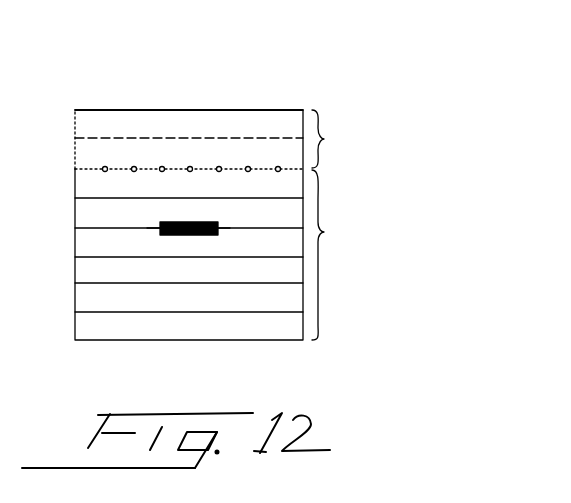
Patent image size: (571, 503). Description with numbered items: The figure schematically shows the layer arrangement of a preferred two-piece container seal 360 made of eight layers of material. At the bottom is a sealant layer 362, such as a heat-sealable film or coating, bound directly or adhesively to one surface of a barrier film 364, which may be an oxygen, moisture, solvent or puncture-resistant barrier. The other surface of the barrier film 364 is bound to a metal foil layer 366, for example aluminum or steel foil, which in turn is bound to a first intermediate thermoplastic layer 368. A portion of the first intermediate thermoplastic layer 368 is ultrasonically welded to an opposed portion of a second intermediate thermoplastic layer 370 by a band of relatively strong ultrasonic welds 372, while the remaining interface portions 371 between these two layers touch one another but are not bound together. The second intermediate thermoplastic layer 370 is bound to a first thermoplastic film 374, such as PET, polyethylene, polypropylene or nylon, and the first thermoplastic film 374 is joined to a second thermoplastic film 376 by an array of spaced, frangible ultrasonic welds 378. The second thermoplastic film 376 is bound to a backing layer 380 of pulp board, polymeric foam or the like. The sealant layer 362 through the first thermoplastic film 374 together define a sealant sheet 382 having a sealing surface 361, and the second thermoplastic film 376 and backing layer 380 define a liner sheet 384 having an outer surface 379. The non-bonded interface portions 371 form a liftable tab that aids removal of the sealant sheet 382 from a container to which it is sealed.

The two-piece container seal 360 is at (98, 392).
The sealing surface 361 is at (279, 345).
The sealant layer 362 is at (96, 331).
The barrier film 364 is at (92, 301).
The metal foil layer 366 is at (84, 273).
The first intermediate thermoplastic layer 368 is at (88, 245).
The second intermediate thermoplastic layer 370 is at (86, 214).
The interface portions 371 is at (230, 232).
The band of relatively strong ultrasonic welds 372 is at (196, 218).
The first thermoplastic film 374 is at (80, 184).
The second thermoplastic film 376 is at (82, 156).
The array of spaced, frangible ultrasonic welds 378 is at (248, 168).
The outer surface 379 is at (122, 106).
The backing layer 380 is at (76, 126).
The sealant sheet 382 is at (347, 255).
The liner sheet 384 is at (348, 139).